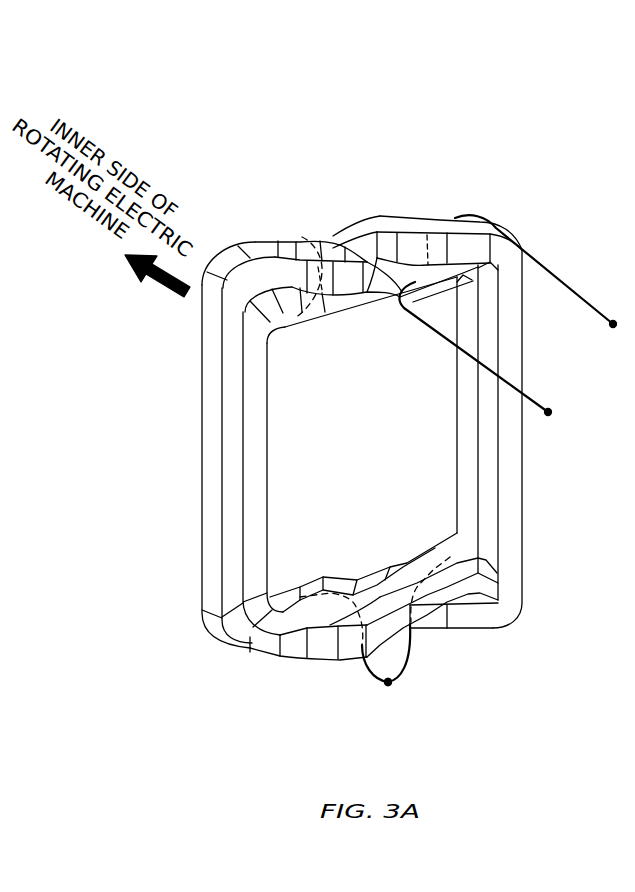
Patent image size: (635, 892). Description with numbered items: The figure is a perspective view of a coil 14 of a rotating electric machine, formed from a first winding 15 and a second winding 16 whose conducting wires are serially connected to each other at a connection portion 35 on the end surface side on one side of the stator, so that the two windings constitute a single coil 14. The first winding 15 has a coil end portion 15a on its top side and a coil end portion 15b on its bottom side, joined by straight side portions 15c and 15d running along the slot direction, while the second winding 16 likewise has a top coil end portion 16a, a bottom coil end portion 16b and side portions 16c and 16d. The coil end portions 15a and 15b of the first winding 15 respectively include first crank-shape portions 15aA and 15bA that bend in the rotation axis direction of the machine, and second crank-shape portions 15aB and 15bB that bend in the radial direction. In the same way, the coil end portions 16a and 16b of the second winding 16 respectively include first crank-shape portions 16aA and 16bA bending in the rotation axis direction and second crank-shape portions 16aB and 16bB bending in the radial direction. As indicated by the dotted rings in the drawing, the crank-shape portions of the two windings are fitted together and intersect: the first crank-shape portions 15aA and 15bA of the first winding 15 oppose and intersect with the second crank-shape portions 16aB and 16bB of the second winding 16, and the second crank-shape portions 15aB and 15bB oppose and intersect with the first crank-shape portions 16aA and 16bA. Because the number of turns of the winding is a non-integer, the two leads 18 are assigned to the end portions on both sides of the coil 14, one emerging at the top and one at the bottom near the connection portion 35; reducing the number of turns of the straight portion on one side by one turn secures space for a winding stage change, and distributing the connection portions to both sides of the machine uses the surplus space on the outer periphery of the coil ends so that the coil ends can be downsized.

The coil 14 is at (516, 212).
The first winding 15 is at (210, 305).
The second winding 16 is at (230, 340).
The coil end portion 15a is at (285, 248).
The coil end portion 15b is at (247, 647).
The first coil slot portion (left) 15c is at (210, 458).
The first coil slot portion (right) 15d is at (467, 450).
The coil end portion 16a is at (452, 222).
The coil end portion 16b is at (480, 615).
The second coil slot portion (left) 16c is at (237, 495).
The second coil slot portion (right) 16d is at (505, 512).
The first crank-shape portion 15aA is at (369, 283).
The second crank-shape portion 15aB is at (285, 277).
The first crank-shape portion 15bA is at (372, 575).
The second crank-shape portion 15bB is at (298, 638).
The first crank-shape portion 16aA is at (340, 235).
The second crank-shape portion 16aB is at (398, 220).
The first crank-shape portion 16bA is at (353, 597).
The second crank-shape portion 16bB is at (410, 624).
The lead 18 is at (562, 292).
The connection portion 35 is at (395, 687).